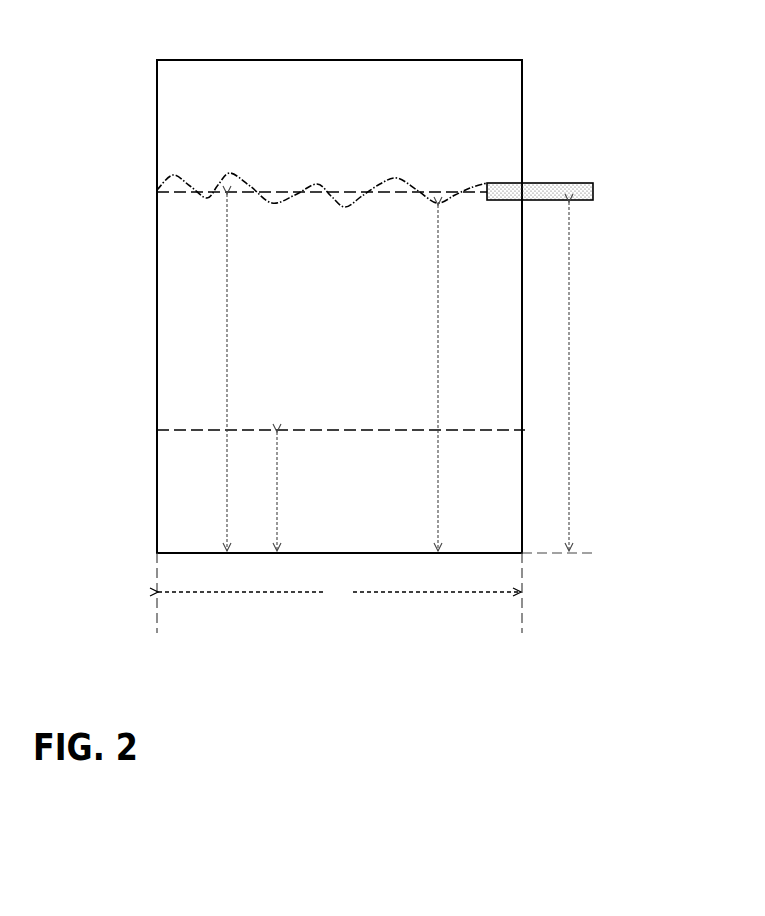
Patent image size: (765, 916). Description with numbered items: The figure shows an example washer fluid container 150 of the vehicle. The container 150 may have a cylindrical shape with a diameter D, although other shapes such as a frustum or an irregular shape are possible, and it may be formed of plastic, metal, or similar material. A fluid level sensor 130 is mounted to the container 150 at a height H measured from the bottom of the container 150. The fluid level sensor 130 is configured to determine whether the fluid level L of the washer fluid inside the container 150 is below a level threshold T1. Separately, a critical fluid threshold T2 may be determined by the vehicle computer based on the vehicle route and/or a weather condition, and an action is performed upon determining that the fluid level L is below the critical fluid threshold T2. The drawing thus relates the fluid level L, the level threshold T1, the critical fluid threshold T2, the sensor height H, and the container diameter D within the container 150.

The washer fluid container 150 is at (157, 152).
The fluid level sensor 130 is at (560, 182).
The level threshold T1 is at (228, 372).
The critical fluid threshold T2 is at (278, 491).
The fluid level L is at (438, 378).
The height H is at (569, 376).
The diameter D is at (339, 593).